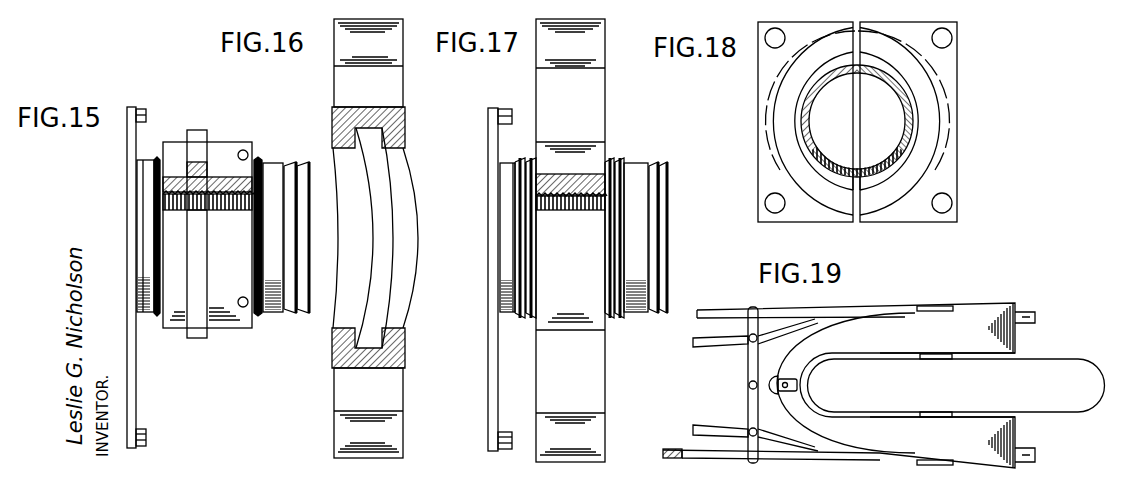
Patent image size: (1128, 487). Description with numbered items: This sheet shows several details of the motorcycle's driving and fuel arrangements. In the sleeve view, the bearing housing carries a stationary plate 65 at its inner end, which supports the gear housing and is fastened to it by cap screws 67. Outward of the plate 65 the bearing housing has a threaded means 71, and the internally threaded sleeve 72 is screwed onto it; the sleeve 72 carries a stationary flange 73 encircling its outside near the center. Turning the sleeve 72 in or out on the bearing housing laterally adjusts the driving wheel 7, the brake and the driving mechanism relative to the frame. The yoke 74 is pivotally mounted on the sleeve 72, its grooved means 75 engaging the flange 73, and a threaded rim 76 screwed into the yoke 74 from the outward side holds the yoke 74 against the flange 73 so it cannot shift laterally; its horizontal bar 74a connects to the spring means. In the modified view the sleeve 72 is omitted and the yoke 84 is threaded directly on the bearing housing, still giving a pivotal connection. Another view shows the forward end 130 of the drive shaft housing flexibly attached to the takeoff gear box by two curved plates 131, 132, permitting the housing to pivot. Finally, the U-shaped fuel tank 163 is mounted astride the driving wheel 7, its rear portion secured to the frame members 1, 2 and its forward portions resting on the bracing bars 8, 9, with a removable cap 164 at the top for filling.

In FIG. 15, the stationary plate 65 is at (132, 400).
In FIG. 17, the stationary plate 65 is at (488, 381).
In FIG. 15, the cap screws 67 is at (143, 110).
In FIG. 17, the cap screws 67 is at (503, 109).
In FIG. 15, the threaded means 71 is at (258, 158).
In FIG. 17, the threaded means 71 is at (612, 160).
In FIG. 15, the sleeve 72 is at (240, 318).
In FIG. 15, the stationary flange 73 is at (197, 130).
In FIG. 16, the yoke 74 is at (332, 110).
In FIG. 16, the horizontal bar 74a is at (337, 398).
In FIG. 16, the grooved means 75 is at (379, 219).
In FIG. 16, the threaded rim 76 is at (395, 243).
In FIG. 17, the yoke 84 is at (598, 314).
In FIG. 18, the forward end of drive shaft housing 130 is at (917, 110).
In FIG. 18, the plate 131 is at (765, 82).
In FIG. 18, the plate 132 is at (950, 68).
In FIG. 19, the horizontal frame member 1 is at (783, 455).
In FIG. 19, the horizontal frame member 2 is at (816, 318).
In FIG. 19, the driving wheel 7 is at (1040, 362).
In FIG. 19, the frame bracing bar 8 is at (712, 426).
In FIG. 19, the frame bracing bar 9 is at (720, 347).
In FIG. 19, the U-shaped fuel tank 163 is at (890, 322).
In FIG. 19, the removable cap 164 is at (787, 377).